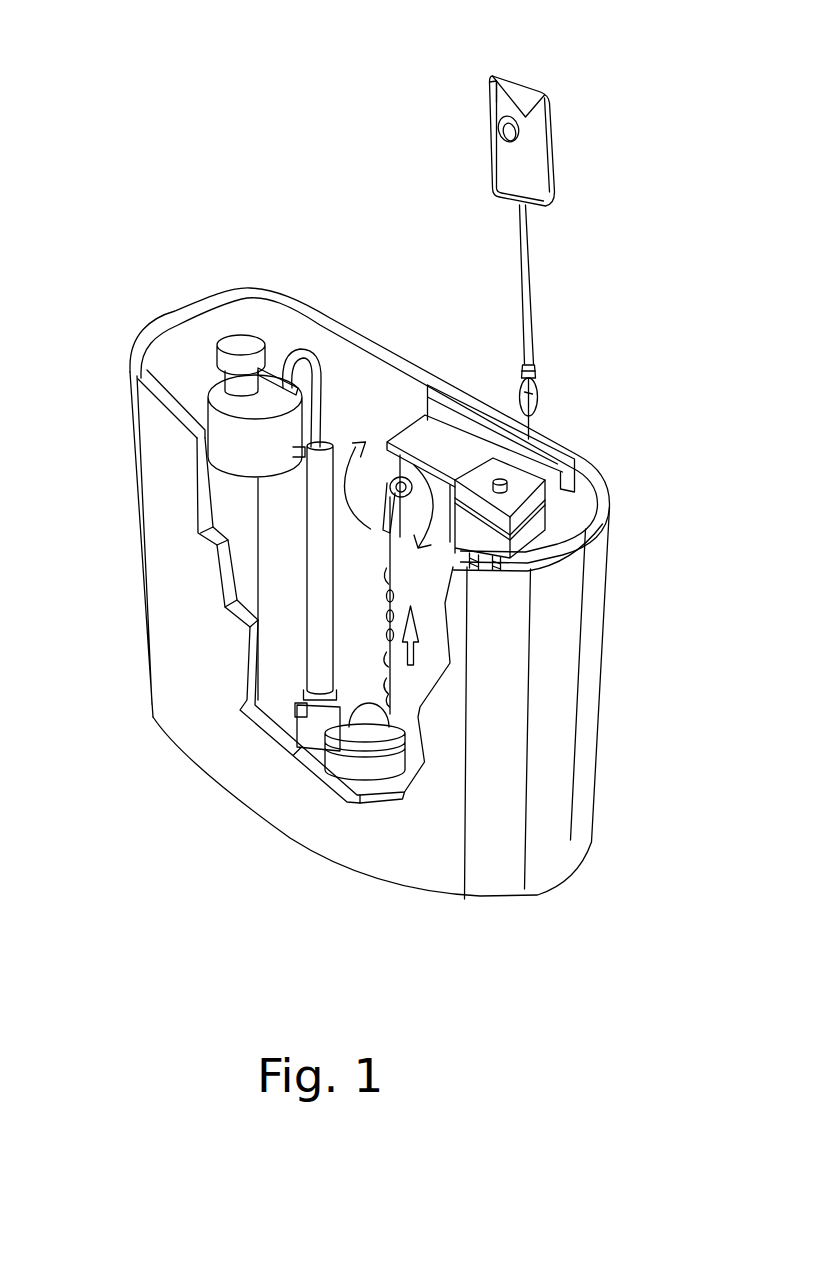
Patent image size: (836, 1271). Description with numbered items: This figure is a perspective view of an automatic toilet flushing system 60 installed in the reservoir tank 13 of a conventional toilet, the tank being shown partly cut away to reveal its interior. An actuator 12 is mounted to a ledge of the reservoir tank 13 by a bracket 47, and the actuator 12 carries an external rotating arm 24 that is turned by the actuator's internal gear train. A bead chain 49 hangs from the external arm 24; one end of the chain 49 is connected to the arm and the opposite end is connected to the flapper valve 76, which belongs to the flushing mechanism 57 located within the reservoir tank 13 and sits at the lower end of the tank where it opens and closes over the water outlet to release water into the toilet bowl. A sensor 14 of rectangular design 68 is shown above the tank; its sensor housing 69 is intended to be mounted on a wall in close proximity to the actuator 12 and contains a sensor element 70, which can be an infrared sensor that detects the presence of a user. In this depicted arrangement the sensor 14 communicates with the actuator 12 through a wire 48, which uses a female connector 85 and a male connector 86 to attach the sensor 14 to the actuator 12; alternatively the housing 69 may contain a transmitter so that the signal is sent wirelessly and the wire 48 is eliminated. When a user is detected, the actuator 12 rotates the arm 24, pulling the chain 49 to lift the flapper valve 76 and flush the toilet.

The actuator 12 is at (457, 453).
The reservoir tank 13 is at (165, 530).
The sensor 14 is at (544, 148).
The external rotating arm 24 is at (400, 474).
The bracket 47 is at (455, 397).
The wire 48 is at (525, 255).
The bead chain 49 is at (380, 590).
The flushing mechanism 57 is at (316, 625).
The automatic toilet flushing system 60 is at (320, 117).
The rectangular design 68 is at (541, 137).
The sensor housing 69 is at (498, 109).
The sensor element 70 is at (512, 130).
The flapper valve 76 is at (390, 726).
The female connector 85 is at (540, 383).
The male connector 86 is at (540, 407).